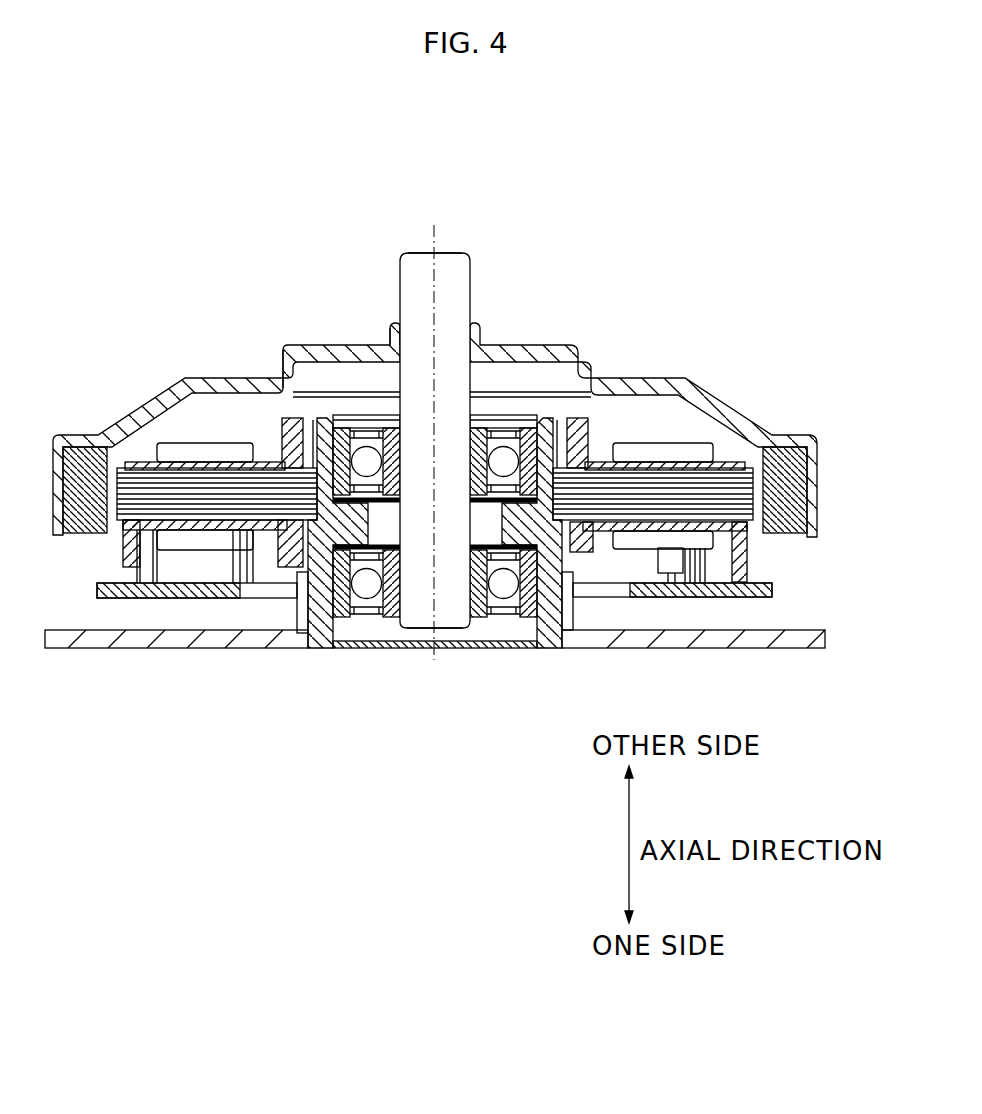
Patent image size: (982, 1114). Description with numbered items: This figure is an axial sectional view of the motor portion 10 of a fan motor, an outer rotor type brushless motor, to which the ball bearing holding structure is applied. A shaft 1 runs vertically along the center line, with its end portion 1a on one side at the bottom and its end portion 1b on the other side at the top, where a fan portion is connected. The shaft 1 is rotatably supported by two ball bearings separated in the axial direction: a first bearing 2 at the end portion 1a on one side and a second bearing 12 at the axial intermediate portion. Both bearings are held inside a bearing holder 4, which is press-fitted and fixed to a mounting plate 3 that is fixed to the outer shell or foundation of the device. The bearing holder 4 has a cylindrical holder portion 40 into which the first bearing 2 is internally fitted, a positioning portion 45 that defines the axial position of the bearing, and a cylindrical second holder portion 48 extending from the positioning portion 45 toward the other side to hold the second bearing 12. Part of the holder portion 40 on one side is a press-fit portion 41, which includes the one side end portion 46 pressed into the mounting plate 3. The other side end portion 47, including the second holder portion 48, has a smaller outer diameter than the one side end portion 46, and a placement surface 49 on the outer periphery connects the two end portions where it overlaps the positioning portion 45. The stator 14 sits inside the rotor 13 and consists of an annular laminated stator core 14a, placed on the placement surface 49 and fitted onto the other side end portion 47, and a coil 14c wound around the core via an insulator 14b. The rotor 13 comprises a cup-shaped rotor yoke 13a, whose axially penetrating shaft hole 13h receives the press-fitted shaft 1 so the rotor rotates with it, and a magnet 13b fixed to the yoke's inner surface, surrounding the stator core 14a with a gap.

The shaft 1 is at (478, 267).
The end portion on one end side 1a is at (452, 626).
The end portion on the other side 1b is at (414, 262).
The ball bearing 2 is at (526, 624).
The mounting plate 3 is at (81, 627).
The bearing holder 4 is at (476, 651).
The motor portion 10 is at (132, 320).
The second bearing 12 is at (484, 412).
The rotor 13 is at (673, 377).
The rotor yoke 13a is at (537, 352).
The magnet 13b is at (778, 537).
The shaft hole 13h is at (454, 327).
The stator 14 is at (167, 432).
The stator core 14a is at (120, 445).
The insulator 14b is at (267, 440).
The coil 14c is at (203, 440).
The holder portion 40 is at (393, 651).
The press-fit portion 41 is at (334, 624).
The positioning portion 45 is at (457, 650).
The one side end portion 46 is at (322, 632).
The other side end portion 47 is at (320, 418).
The second holder portion 48 is at (338, 412).
The placement surface 49 is at (285, 365).